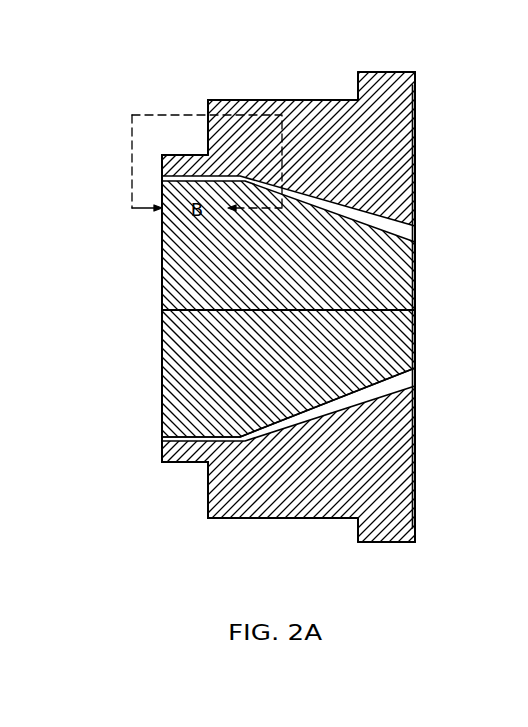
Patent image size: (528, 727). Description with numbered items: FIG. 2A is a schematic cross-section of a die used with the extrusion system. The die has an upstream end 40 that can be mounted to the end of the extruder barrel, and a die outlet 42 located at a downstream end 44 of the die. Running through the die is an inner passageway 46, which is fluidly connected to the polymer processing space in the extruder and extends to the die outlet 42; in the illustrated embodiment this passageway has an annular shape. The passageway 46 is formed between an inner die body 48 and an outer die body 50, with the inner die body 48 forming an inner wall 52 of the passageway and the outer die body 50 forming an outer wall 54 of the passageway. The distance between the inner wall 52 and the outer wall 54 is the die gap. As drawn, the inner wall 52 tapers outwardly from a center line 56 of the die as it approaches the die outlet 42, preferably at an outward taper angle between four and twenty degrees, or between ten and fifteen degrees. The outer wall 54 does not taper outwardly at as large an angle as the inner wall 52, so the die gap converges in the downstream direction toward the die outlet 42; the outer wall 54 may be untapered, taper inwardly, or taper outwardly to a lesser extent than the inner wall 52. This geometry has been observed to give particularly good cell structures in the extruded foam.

The upstream end 40 is at (428, 537).
The die outlet 42 is at (160, 178).
The downstream end 44 is at (169, 497).
The inner passageway 46 is at (420, 237).
The inner die body 48 is at (363, 267).
The outer die body 50 is at (317, 120).
The inner wall 52 is at (368, 382).
The outer wall 54 is at (358, 403).
The center line 56 is at (170, 298).